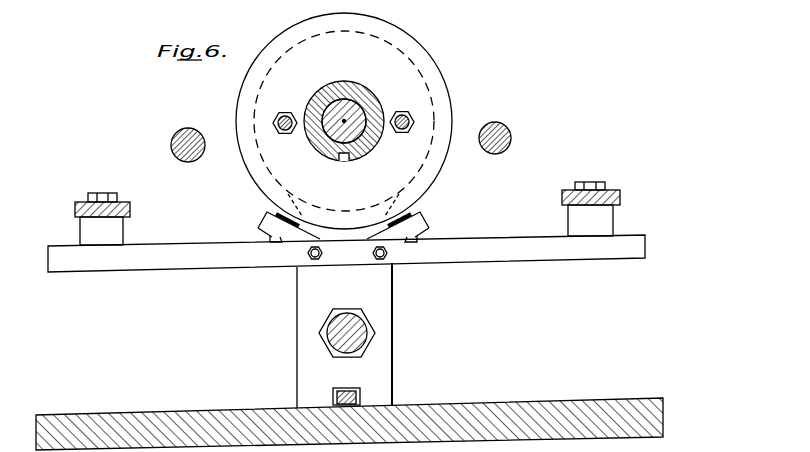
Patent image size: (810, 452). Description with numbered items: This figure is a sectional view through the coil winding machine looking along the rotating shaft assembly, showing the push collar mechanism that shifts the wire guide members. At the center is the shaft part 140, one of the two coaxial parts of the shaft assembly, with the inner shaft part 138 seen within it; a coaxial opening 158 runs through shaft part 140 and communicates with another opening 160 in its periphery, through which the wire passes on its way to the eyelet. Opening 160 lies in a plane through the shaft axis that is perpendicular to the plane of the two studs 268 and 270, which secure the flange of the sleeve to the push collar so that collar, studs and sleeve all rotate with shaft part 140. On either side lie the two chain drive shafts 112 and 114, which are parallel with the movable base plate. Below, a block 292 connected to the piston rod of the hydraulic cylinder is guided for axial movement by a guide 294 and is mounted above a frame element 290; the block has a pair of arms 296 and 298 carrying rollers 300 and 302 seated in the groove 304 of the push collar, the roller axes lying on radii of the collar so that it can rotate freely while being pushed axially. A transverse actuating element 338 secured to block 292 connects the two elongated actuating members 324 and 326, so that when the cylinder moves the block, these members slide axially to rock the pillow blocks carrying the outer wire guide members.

The shaft 112 is at (184, 130).
The shaft 114 is at (513, 134).
The shaft part 138 is at (338, 140).
The shaft part 140 is at (357, 85).
The coaxial opening 158 is at (342, 112).
The opening 160 is at (347, 163).
The stud 268 is at (285, 110).
The stud 270 is at (401, 109).
The frame element 290 is at (360, 330).
The block 292 is at (394, 297).
The guide 294 is at (357, 398).
The arm 296 is at (262, 222).
The arm 298 is at (428, 217).
The roller 300 is at (272, 199).
The roller 302 is at (412, 197).
The groove 304 is at (411, 63).
The actuating member 324 is at (83, 201).
The actuating member 326 is at (607, 190).
The transverse actuating element 338 is at (220, 262).